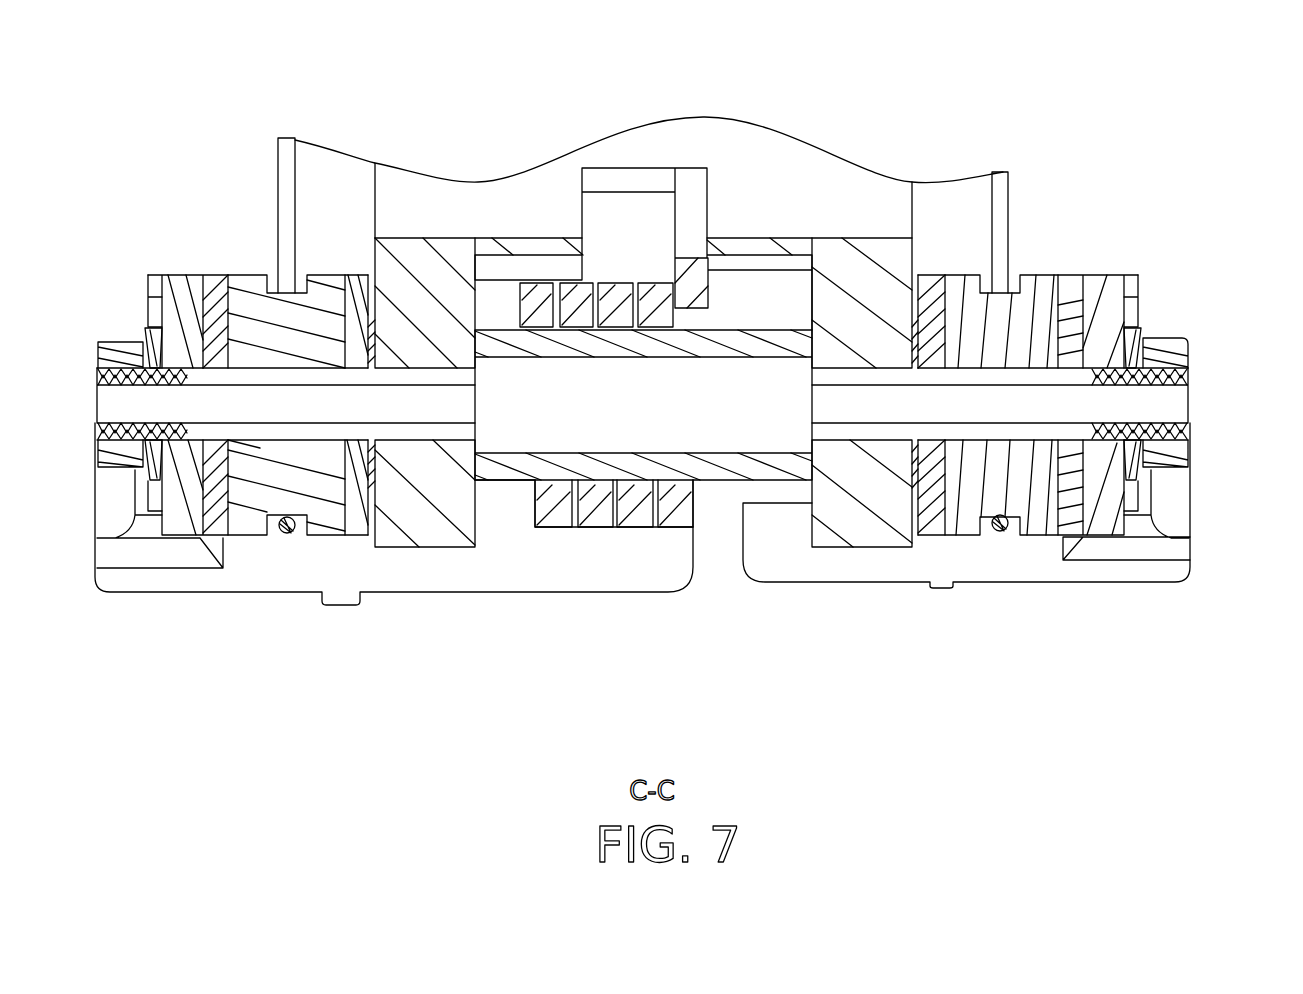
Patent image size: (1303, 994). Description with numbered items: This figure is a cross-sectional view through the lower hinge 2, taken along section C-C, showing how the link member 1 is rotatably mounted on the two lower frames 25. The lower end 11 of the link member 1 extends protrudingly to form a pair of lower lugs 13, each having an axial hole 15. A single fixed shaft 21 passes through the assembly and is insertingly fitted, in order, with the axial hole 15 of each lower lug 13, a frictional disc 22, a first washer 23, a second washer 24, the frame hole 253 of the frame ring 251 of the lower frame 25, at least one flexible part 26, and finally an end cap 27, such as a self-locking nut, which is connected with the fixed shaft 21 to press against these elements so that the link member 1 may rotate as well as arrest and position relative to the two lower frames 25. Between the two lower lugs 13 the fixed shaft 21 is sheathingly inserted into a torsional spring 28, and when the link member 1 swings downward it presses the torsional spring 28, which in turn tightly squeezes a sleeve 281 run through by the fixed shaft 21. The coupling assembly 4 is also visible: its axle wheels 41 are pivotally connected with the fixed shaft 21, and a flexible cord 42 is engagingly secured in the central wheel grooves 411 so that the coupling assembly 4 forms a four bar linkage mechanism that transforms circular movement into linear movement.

The link member 1 is at (759, 195).
The lower hinge 2 is at (822, 641).
The coupling assembly 4 is at (318, 632).
The lower end 11 is at (742, 298).
The lower lug 13 is at (422, 522).
The axial hole 15 is at (426, 363).
The fixed shaft 21 is at (719, 420).
The frictional disc 22 is at (373, 328).
The first washer 23 is at (352, 530).
The second washer 24 is at (213, 287).
The lower frame 25 is at (1124, 578).
The flexible part 26 is at (146, 328).
The end cap 27 is at (115, 462).
The torsional spring 28 is at (598, 515).
The axle wheel 41 is at (249, 287).
The flexible cord 42 is at (1003, 183).
The frame ring 251 is at (178, 287).
The frame hole 253 is at (172, 450).
The sleeve 281 is at (518, 472).
The central wheel groove 411 is at (284, 536).